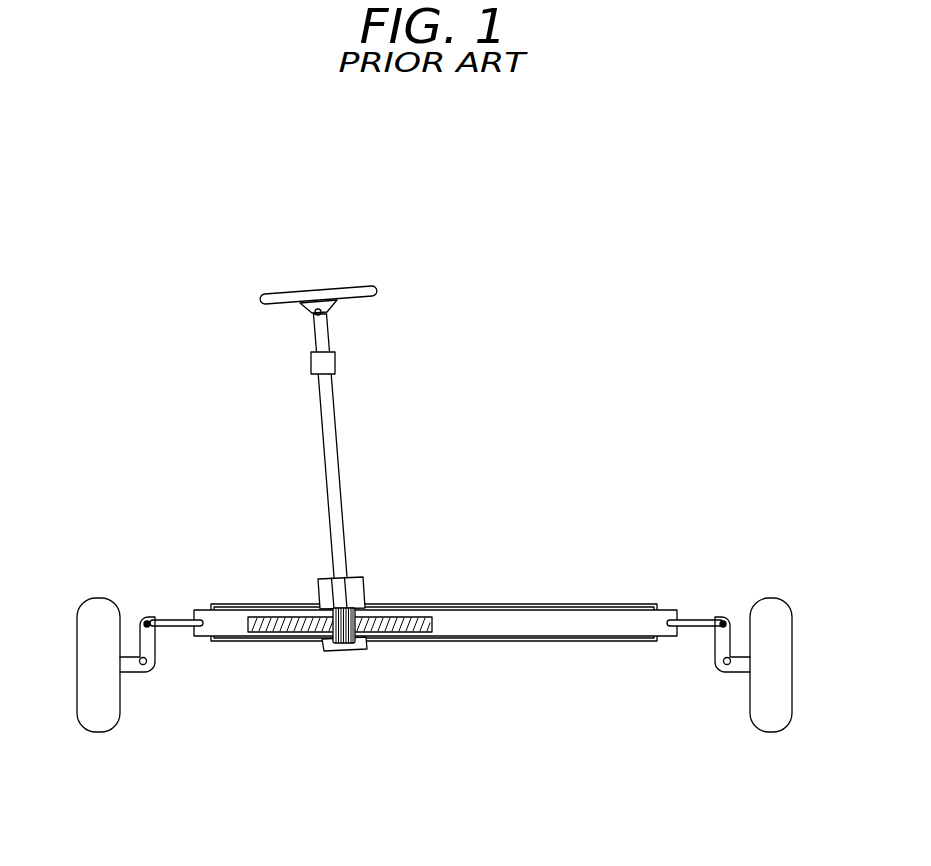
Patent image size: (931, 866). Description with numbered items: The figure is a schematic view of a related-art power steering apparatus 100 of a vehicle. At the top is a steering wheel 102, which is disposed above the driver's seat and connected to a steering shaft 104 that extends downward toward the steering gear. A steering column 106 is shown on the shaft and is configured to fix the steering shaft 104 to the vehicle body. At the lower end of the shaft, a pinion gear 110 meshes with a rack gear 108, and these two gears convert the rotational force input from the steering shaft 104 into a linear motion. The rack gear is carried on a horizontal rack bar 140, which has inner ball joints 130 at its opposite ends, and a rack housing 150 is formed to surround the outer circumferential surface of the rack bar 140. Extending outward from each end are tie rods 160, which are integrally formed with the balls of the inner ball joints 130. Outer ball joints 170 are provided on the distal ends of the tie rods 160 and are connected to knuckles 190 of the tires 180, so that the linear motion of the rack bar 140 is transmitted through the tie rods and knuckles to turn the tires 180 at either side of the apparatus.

The power steering apparatus 100 is at (515, 311).
The steering wheel 102 is at (370, 292).
The steering shaft 104 is at (337, 448).
The steering column 106 is at (338, 362).
The rack gear 108 is at (421, 633).
The pinion gear 110 is at (327, 650).
The inner ball joints 130 is at (203, 608).
The rack bar 140 is at (572, 628).
The rack housing 150 is at (510, 605).
The tie rods 160 is at (177, 621).
The outer ball joints 170 is at (146, 618).
The tires 180 is at (95, 605).
The knuckles 190 is at (153, 639).